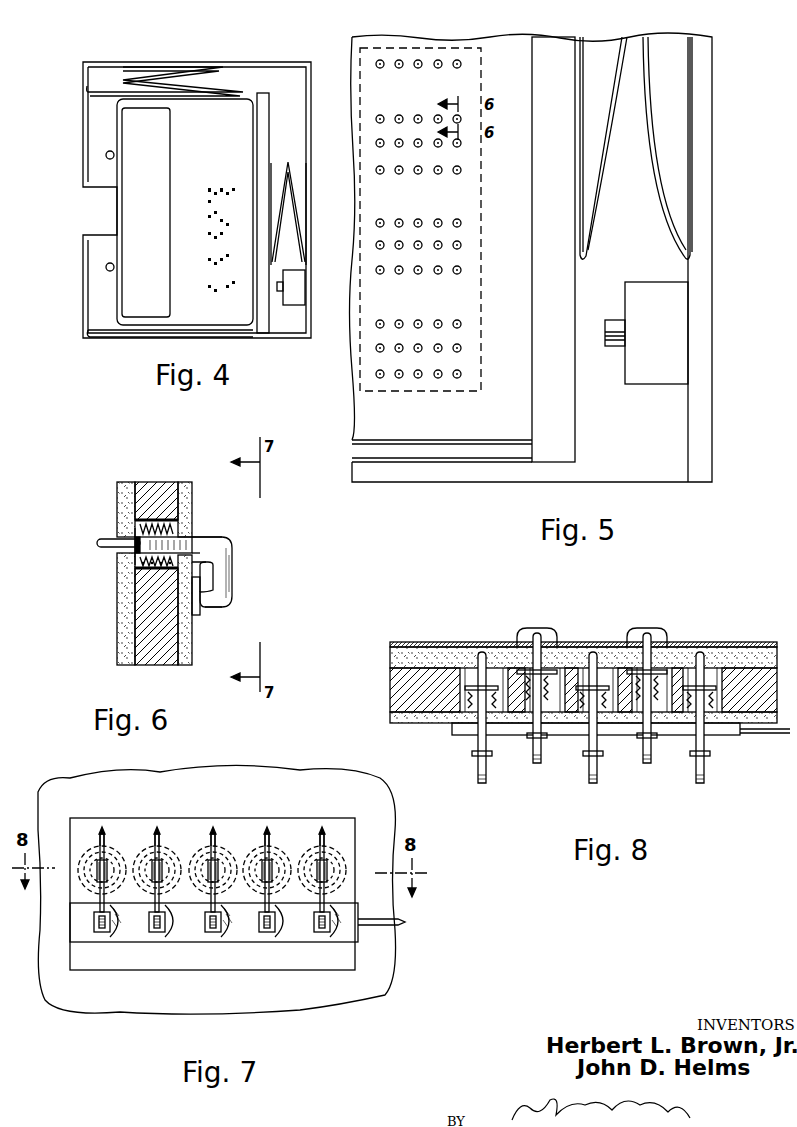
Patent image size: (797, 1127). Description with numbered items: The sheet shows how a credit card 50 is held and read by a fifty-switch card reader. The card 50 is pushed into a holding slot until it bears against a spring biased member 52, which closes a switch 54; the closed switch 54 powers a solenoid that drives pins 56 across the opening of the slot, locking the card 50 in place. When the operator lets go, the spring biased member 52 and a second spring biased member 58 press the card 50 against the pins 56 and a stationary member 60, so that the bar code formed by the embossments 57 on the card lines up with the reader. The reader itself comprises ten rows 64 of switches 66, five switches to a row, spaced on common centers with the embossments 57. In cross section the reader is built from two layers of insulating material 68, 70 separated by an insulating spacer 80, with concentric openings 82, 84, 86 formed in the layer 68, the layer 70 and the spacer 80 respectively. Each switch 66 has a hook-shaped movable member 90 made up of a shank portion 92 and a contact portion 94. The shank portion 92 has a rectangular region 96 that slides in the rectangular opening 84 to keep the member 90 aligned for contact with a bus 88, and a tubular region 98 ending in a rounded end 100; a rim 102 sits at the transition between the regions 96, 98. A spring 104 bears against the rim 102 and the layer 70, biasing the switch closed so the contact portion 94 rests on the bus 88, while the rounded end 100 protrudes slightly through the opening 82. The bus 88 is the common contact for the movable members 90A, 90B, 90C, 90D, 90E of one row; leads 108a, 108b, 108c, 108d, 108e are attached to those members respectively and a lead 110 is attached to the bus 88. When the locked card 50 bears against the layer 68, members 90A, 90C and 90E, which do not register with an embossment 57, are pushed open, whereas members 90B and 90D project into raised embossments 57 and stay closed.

In FIG. 4, the card 50 is at (118, 110).
In FIG. 8, the card 50 is at (712, 643).
In FIG. 4, the spring biased member 52 is at (270, 98).
In FIG. 5, the spring biased member 52 is at (576, 437).
In FIG. 4, the switch 54 is at (296, 306).
In FIG. 5, the switch 54 is at (655, 384).
In FIG. 4, the pins 56 is at (106, 155).
In FIG. 8, the bar coded embossments 57 is at (527, 628).
In FIG. 4, the spring biased member 58 is at (240, 97).
In FIG. 4, the stationary member 60 is at (130, 333).
In FIG. 5, the rows of switches 64 is at (439, 219).
In FIG. 5, the switches 66 is at (461, 225).
In FIG. 6, the switches 66 is at (230, 546).
In FIG. 6, the layer of insulating material 68 is at (117, 495).
In FIG. 8, the layer of insulating material 68 is at (390, 657).
In FIG. 6, the layer of insulating material 70 is at (193, 496).
In FIG. 6, the insulating spacer 80 is at (168, 660).
In FIG. 6, the opening 82 is at (133, 556).
In FIG. 6, the rectangular opening 84 is at (180, 528).
In FIG. 6, the opening 86 is at (142, 580).
In FIG. 6, the bus 88 is at (201, 612).
In FIG. 7, the bus 88 is at (360, 942).
In FIG. 8, the bus 88 is at (452, 731).
In FIG. 6, the movable member 90 is at (233, 570).
In FIG. 7, the movable member 90A is at (102, 897).
In FIG. 8, the movable member 90A is at (481, 784).
In FIG. 7, the movable member 90B is at (157, 897).
In FIG. 8, the movable member 90B is at (538, 764).
In FIG. 7, the movable member 90C is at (213, 897).
In FIG. 8, the movable member 90C is at (594, 784).
In FIG. 7, the movable member 90D is at (267, 897).
In FIG. 8, the movable member 90D is at (649, 764).
In FIG. 7, the movable member 90E is at (322, 897).
In FIG. 8, the movable member 90E is at (706, 784).
In FIG. 6, the shank portion 92 is at (178, 538).
In FIG. 6, the contact portion 94 is at (212, 605).
In FIG. 6, the rectangular region 96 is at (200, 550).
In FIG. 6, the tubular region 98 is at (112, 538).
In FIG. 6, the rounded end 100 is at (97, 543).
In FIG. 6, the rim 102 is at (135, 580).
In FIG. 6, the spring 104 is at (168, 505).
In FIG. 7, the lead 108a is at (106, 830).
In FIG. 7, the lead 108b is at (161, 832).
In FIG. 7, the lead 108c is at (218, 832).
In FIG. 7, the lead 108d is at (272, 832).
In FIG. 7, the lead 108e is at (327, 832).
In FIG. 7, the lead 110 is at (394, 919).
In FIG. 8, the lead 110 is at (776, 749).